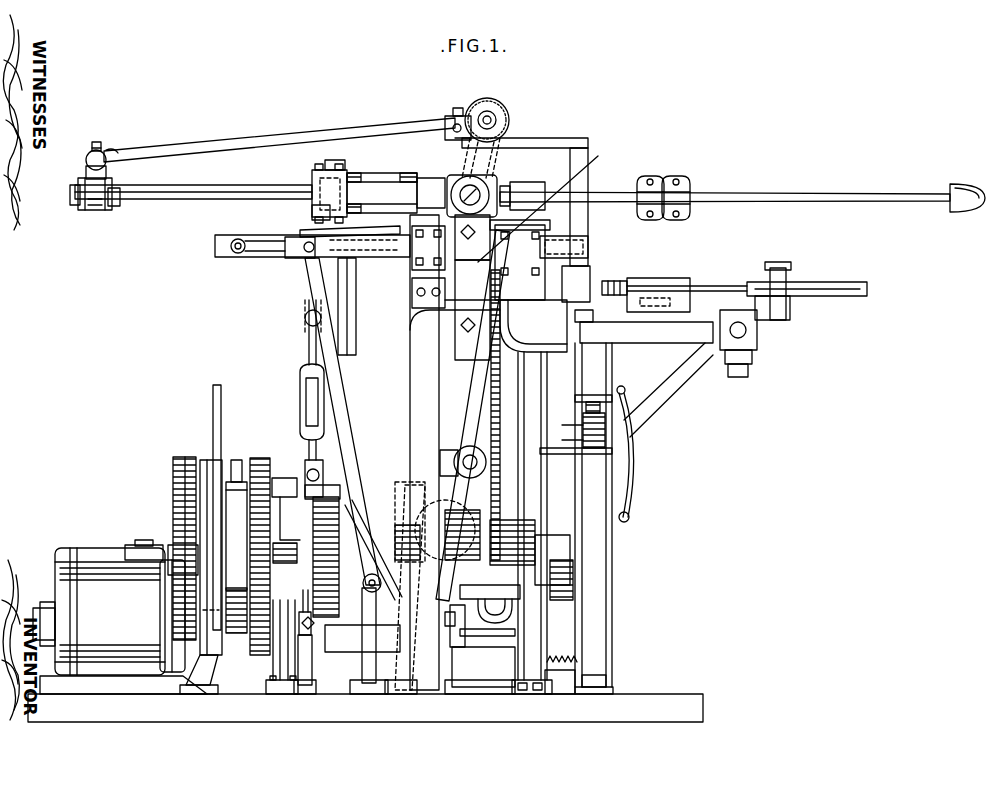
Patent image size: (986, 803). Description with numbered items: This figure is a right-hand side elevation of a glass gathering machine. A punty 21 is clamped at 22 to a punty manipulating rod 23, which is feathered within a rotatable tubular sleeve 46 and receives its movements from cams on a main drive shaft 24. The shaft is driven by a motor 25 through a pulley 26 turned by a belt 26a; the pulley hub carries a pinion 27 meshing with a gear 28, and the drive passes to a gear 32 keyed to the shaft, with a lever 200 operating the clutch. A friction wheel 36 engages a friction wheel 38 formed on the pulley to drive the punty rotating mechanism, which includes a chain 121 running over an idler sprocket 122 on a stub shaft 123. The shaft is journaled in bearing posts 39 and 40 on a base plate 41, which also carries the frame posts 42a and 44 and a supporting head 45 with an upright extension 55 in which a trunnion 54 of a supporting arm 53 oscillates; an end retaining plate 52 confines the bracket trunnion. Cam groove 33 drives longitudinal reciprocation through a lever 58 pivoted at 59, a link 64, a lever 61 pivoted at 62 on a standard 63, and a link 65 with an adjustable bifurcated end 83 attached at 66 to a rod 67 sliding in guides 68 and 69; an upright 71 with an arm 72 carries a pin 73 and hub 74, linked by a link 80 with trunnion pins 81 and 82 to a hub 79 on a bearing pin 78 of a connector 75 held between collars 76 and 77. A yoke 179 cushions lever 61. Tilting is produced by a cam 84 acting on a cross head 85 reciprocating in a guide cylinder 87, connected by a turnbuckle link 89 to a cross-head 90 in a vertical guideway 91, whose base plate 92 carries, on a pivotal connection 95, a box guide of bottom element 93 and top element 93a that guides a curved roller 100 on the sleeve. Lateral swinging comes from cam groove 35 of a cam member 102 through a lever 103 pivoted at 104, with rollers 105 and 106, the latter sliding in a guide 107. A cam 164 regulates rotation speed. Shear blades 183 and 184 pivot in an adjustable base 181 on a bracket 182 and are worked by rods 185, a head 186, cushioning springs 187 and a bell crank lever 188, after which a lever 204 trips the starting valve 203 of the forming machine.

The punty 21 is at (916, 188).
The clamp 22 is at (686, 190).
The punty manipulating rod 23 is at (212, 186).
The main drive shaft 24 is at (128, 550).
The driving motor 25 is at (109, 611).
The pulley 26 is at (176, 486).
The belt 26a is at (208, 462).
The pinion 27 is at (176, 530).
The gear 28 is at (176, 497).
The gear 32 is at (258, 456).
The cam groove 33 is at (496, 516).
The cam groove 35 is at (476, 632).
The friction wheel 36 is at (236, 460).
The friction wheel 38 is at (228, 645).
The bearing post 39 is at (278, 657).
The bearing post 40 is at (598, 640).
The base plate 41 is at (164, 700).
The supporting post 42a is at (600, 600).
The supporting post 44 is at (410, 405).
The supporting head 45 is at (525, 345).
The tubular sleeve 46 is at (368, 186).
The end retaining plate 52 is at (510, 184).
The supporting arm 53 is at (552, 201).
The trunnion 54 is at (495, 290).
The upright extension 55 is at (448, 306).
The lever 58 is at (455, 665).
The pivot 59 is at (414, 522).
The lever 61 is at (342, 440).
The pivot 62 is at (364, 588).
The standard 63 is at (365, 675).
The link 64 is at (402, 692).
The link 65 is at (266, 255).
The pivotal attachment 66 is at (236, 254).
The rod 67 is at (570, 246).
The guide 68 is at (536, 258).
The guide 69 is at (428, 267).
The upright 71 is at (586, 180).
The arm 72 is at (547, 143).
The pin 73 is at (466, 110).
The hub 74 is at (458, 138).
The connector 75 is at (93, 205).
The collar 76 is at (114, 205).
The collar 77 is at (80, 204).
The bearing pin 78 is at (98, 144).
The hub 79 is at (84, 170).
The link 80 is at (288, 137).
The trunnion pin 81 is at (456, 126).
The trunnion pin 82 is at (118, 144).
The bifurcated end 83 is at (300, 258).
The cam 84 is at (348, 500).
The cross head 85 is at (305, 480).
The guide cylinder 87 is at (310, 690).
The adjustable link 89 is at (304, 393).
The cross-head 90 is at (349, 348).
The vertical guideway 91 is at (305, 320).
The base plate 92 is at (308, 232).
The bottom element 93 is at (314, 213).
The top element 93a is at (345, 160).
The pivotal connection 95 is at (362, 236).
The curved roller 100 is at (316, 184).
The cam member 102 is at (512, 548).
The lever 103 is at (492, 426).
The pivot 104 is at (478, 462).
The roller 105 is at (492, 536).
The roller 106 is at (540, 205).
The guide 107 is at (545, 228).
The chain 121 is at (500, 400).
The idler sprocket 122 is at (502, 106).
The stub shaft 123 is at (498, 120).
The cam 164 is at (562, 560).
The yoke 179 is at (348, 645).
The adjustable base 181 is at (796, 322).
The bracket 182 is at (682, 346).
The shear blade 183 is at (855, 276).
The shear blade 184 is at (778, 322).
The rod 185 is at (732, 286).
The head 186 is at (670, 282).
The cushioning spring 187 is at (624, 282).
The bell crank lever 188 is at (640, 335).
The lever 200 is at (214, 396).
The starting valve 203 is at (612, 445).
The lever 204 is at (630, 514).